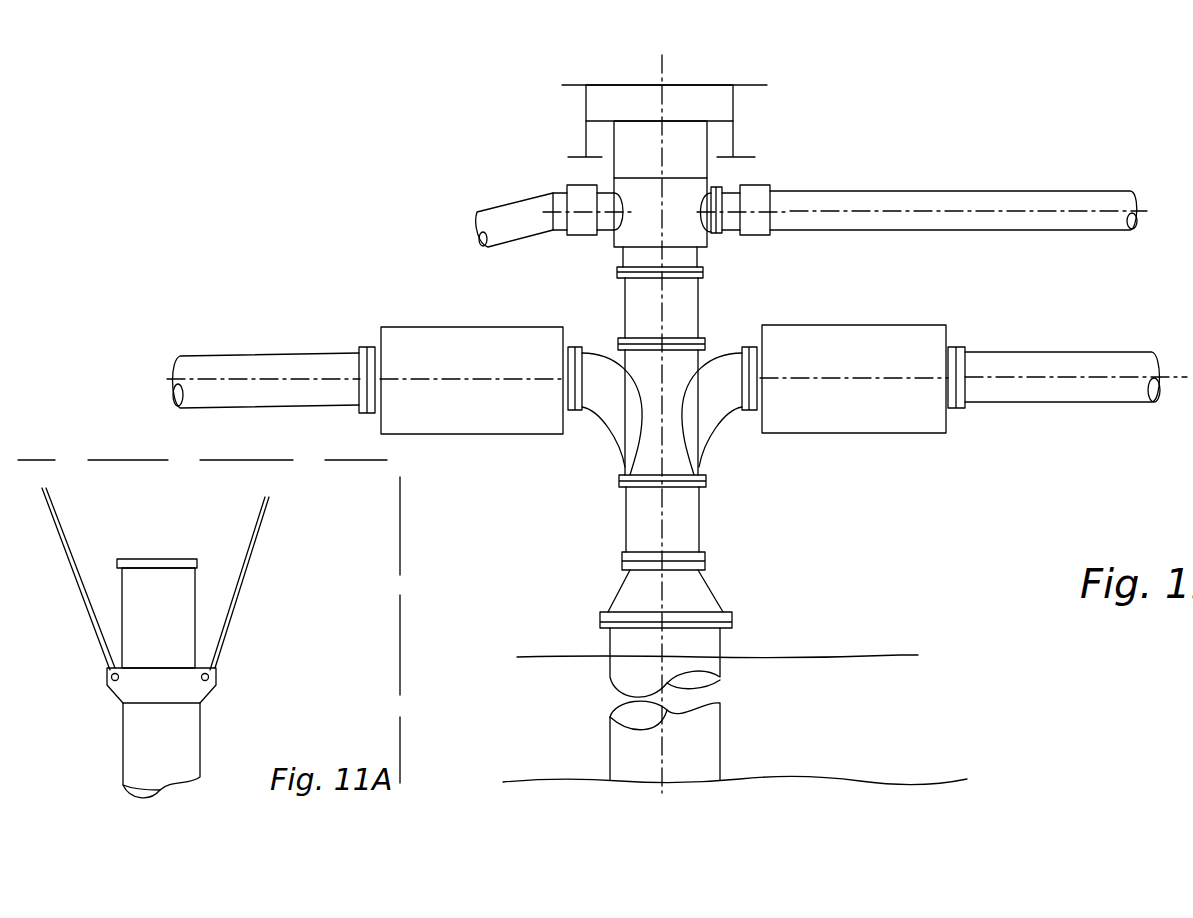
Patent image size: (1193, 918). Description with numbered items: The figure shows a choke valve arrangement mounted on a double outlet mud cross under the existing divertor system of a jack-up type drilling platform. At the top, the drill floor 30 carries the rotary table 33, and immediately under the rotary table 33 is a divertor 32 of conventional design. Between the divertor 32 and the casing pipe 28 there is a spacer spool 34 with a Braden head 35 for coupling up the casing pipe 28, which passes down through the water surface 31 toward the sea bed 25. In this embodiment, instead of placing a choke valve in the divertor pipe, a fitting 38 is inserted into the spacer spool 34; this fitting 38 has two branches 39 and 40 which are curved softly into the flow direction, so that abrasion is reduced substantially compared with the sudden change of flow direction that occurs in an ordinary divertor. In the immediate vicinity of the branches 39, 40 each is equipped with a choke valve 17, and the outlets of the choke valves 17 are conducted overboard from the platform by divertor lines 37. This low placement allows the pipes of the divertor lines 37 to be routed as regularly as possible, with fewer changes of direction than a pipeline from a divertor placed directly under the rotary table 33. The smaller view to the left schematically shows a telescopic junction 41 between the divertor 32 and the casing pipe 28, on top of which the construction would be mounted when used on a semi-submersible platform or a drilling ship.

In FIG. 11, the choke valve 17 is at (477, 347).
In FIG. 11, the sea bed 25 is at (887, 777).
In FIG. 11, the casing pipe 28 is at (780, 739).
In FIG. 11, the drill floor 30 is at (760, 83).
In FIG. 11, the water surface 31 is at (882, 652).
In FIG. 11, the divertor 32 is at (695, 187).
In FIG. 11, the rotary table 33 is at (688, 83).
In FIG. 11, the spacer spool 34 is at (683, 533).
In FIG. 11, the Braden head 35 is at (697, 600).
In FIG. 11, the divertor pipe 37 is at (945, 202).
In FIG. 11, the fitting 38 is at (643, 462).
In FIG. 11, the branch 39 is at (623, 428).
In FIG. 11, the branch 40 is at (695, 432).
In FIG. 11A, the telescopic junction 41 is at (180, 738).